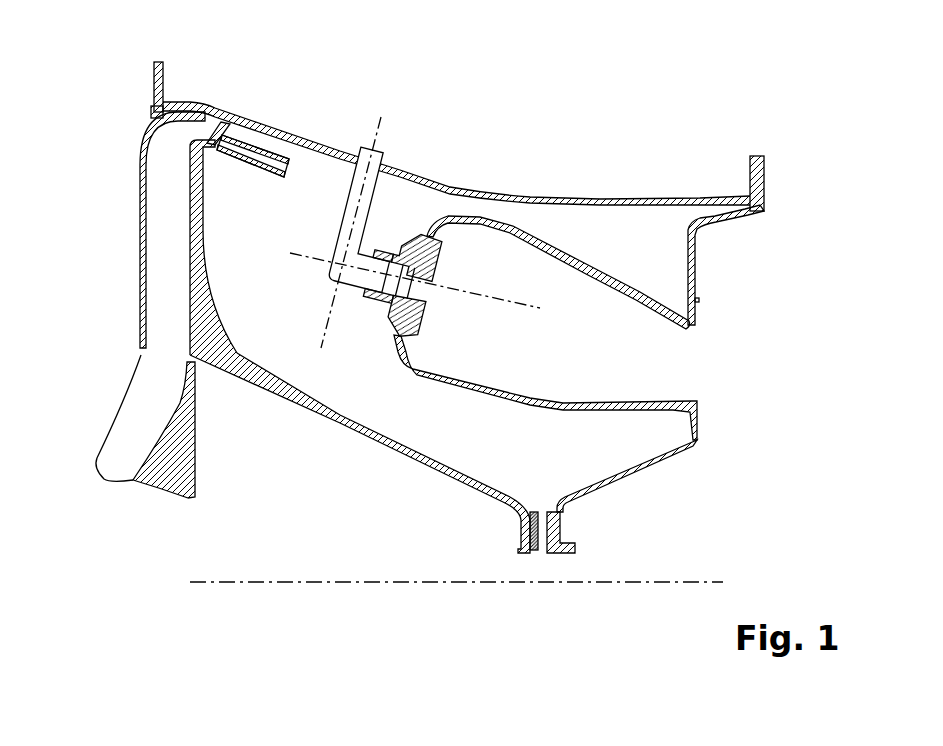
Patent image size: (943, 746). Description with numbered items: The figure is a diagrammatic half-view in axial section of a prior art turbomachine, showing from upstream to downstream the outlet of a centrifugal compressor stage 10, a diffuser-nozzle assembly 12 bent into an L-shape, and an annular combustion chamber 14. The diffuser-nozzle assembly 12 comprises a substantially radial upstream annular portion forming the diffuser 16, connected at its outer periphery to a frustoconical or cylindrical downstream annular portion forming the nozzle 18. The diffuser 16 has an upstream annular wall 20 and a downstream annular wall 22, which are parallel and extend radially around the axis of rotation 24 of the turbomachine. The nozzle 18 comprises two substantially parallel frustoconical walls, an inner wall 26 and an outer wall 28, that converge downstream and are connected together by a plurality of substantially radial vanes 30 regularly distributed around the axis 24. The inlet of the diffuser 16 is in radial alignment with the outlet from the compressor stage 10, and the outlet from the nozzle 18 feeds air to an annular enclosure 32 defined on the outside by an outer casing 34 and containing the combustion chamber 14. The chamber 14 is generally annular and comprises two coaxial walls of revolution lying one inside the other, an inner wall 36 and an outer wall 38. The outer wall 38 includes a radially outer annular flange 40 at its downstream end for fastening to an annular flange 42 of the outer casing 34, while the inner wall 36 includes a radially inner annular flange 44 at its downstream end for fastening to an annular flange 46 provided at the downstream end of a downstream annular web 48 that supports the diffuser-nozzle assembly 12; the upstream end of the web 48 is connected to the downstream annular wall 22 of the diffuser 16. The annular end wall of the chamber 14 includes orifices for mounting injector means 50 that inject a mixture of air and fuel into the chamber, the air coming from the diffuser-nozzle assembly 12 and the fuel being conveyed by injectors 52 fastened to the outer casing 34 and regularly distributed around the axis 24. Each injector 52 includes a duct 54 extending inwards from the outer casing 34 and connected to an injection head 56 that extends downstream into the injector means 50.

The centrifugal compressor stage 10 is at (114, 390).
The diffuser-nozzle assembly 12 is at (126, 105).
The annular combustion chamber 14 is at (415, 303).
The upstream annular portion forming the diffuser 16 is at (140, 155).
The downstream annular portion forming the nozzle 18 is at (256, 173).
The upstream annular wall 20 is at (128, 230).
The downstream annular wall 22 is at (203, 250).
The axis of rotation 24 is at (723, 583).
The inner wall 26 is at (227, 158).
The outer wall 28 is at (293, 134).
The substantially radial vanes 30 is at (253, 155).
The annular enclosure 32 is at (350, 206).
The outer casing 34 is at (542, 196).
The inner wall of the chamber 36 is at (649, 403).
The outer wall of the chamber 38 is at (643, 290).
The radially outer annular flange 40 is at (762, 228).
The annular flange of the outer casing 42 is at (752, 168).
The radially inner annular flange 44 is at (563, 531).
The annular flange of the web 46 is at (519, 527).
The downstream annular web 48 is at (388, 442).
The injector means 50 is at (421, 328).
The injectors 52 is at (395, 152).
The duct 54 is at (347, 218).
The injection head 56 is at (389, 265).